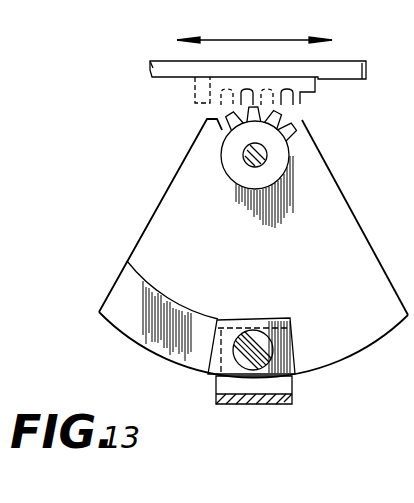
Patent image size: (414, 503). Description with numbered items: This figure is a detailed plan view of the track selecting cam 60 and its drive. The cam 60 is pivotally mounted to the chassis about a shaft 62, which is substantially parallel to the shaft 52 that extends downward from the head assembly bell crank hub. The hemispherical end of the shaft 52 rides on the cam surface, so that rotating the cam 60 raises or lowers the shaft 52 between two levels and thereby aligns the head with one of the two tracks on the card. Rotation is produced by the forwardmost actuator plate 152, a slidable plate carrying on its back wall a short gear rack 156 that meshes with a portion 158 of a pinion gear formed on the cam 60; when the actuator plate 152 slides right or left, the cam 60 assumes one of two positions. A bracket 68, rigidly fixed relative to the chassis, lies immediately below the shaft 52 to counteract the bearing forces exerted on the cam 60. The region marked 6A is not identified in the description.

The actuator plate 152 is at (344, 61).
The gear rack 156 is at (320, 89).
The portion of a pinion gear 158 is at (300, 115).
The shaft 62 is at (244, 160).
The cam 60 is at (327, 198).
The arcuate track band 6A is at (195, 348).
The shaft 52 is at (245, 331).
The bracket 68 is at (292, 389).